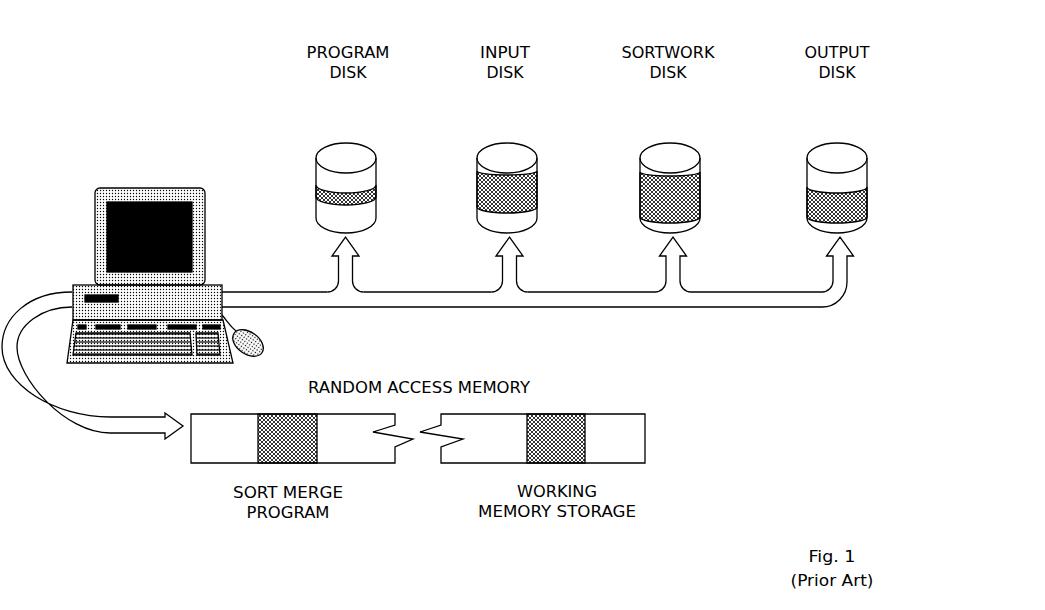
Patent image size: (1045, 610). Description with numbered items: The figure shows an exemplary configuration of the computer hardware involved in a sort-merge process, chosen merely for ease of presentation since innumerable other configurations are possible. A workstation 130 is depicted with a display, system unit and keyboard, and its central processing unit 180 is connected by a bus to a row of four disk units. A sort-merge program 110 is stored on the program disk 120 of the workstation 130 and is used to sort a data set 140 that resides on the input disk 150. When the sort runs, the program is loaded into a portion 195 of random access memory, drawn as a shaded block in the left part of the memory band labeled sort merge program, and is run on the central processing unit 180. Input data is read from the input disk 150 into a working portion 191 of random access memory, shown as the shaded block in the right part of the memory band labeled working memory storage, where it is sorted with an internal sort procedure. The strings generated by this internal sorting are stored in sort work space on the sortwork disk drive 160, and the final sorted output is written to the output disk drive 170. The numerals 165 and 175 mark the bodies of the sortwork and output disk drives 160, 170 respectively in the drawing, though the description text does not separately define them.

The sort-merge program 110 is at (316, 190).
The disk 120 is at (374, 152).
The workstation 130 is at (104, 192).
The data set 140 is at (477, 192).
The input disk 150 is at (527, 147).
The disk drive 160 is at (685, 147).
The sortwork disk drive 165 is at (640, 190).
The disk drive 170 is at (853, 147).
The output disk drive 175 is at (807, 193).
The central processing unit 180 is at (222, 287).
The working portion of random access memory 191 is at (557, 413).
The portion of random access memory 195 is at (290, 413).